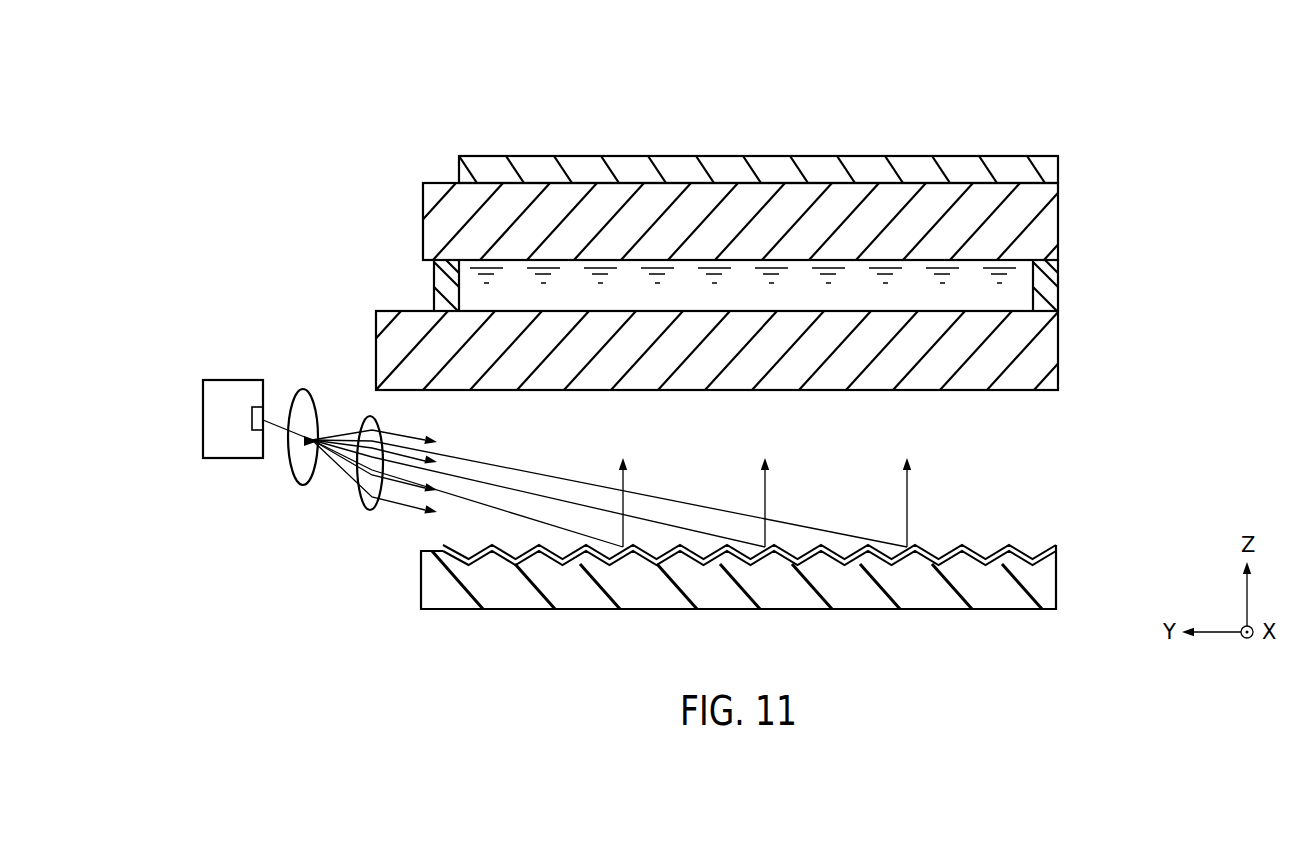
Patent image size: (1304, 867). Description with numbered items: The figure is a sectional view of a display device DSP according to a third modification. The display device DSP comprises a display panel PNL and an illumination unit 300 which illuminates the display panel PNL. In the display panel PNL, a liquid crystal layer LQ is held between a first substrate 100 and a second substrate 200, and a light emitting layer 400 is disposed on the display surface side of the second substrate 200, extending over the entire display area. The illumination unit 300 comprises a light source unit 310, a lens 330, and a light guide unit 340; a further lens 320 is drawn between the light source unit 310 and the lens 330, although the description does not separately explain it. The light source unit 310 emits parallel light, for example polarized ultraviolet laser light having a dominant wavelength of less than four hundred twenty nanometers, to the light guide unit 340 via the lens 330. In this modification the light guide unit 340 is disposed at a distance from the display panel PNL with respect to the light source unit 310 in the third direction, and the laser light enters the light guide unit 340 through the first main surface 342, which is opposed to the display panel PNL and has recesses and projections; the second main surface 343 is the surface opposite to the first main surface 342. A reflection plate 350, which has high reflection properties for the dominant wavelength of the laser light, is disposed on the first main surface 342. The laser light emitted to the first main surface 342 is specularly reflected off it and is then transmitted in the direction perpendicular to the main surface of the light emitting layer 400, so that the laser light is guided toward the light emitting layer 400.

The display device DSP is at (1156, 118).
The display panel PNL is at (1103, 284).
The light emitting layer 400 is at (390, 167).
The second substrate 200 is at (390, 223).
The liquid crystal layer LQ is at (376, 280).
The first substrate 100 is at (353, 356).
The illumination unit 300 is at (326, 602).
The light source unit 310 is at (233, 458).
The first lens 320 is at (303, 486).
The lens 330 is at (370, 511).
The light guide unit 340 is at (1058, 587).
The first main surface 342 is at (1016, 528).
The second main surface 343 is at (1012, 622).
The reflection plate 350 is at (1058, 548).